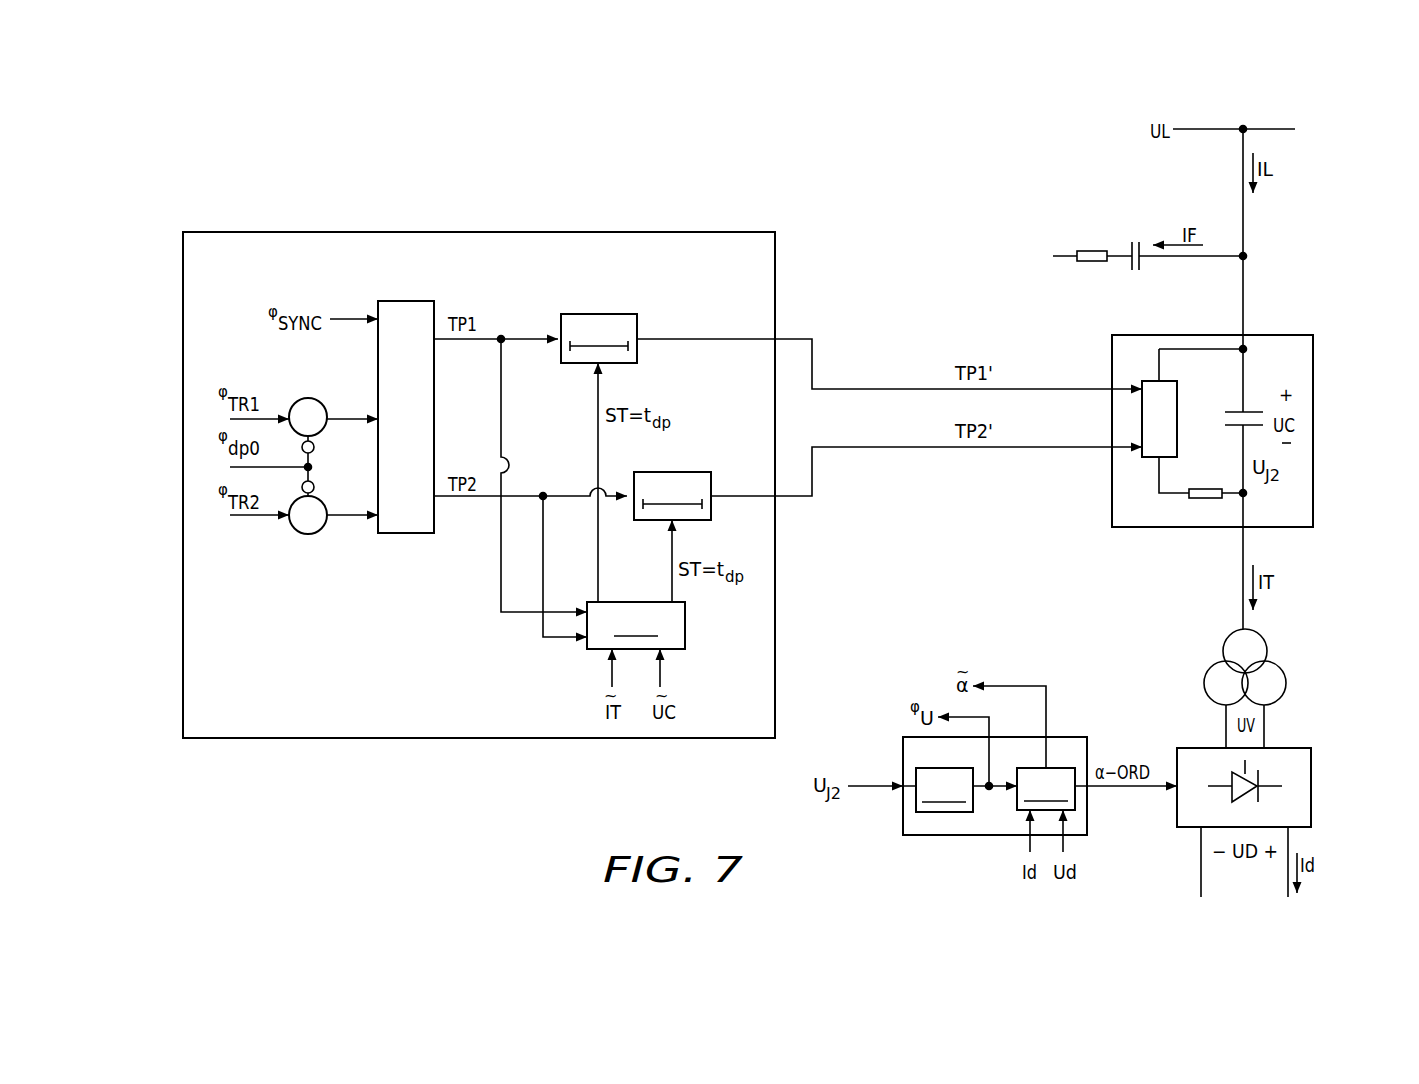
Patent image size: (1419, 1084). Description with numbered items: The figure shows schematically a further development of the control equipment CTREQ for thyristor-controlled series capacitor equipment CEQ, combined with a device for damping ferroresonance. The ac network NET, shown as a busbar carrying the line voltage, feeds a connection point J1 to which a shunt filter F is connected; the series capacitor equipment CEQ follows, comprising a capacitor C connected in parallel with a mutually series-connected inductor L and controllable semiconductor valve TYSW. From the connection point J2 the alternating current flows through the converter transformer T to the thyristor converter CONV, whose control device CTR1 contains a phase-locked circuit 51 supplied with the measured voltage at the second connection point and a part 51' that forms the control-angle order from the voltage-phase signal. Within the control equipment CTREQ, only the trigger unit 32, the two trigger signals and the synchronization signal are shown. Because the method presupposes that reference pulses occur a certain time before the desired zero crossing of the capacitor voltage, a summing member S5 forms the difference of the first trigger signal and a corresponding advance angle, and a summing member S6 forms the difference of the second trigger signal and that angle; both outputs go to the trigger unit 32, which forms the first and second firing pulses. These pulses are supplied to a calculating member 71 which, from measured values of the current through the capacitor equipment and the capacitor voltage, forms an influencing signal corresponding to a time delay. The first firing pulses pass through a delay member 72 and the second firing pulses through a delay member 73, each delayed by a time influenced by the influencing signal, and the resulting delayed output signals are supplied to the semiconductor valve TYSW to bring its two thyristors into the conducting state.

The trigger unit 32 is at (412, 301).
The summing member S5 is at (323, 403).
The summing member S6 is at (323, 530).
The calculating member 71 is at (685, 628).
The delay member 72 is at (637, 328).
The delay member 73 is at (711, 483).
The phase-locked circuit 51 is at (944, 822).
The control device part 51' is at (1029, 822).
The control equipment CTREQ is at (741, 232).
The ac network NET is at (1207, 131).
The connection point J1 is at (1243, 256).
The shunt filter F is at (1122, 263).
The thyristor-controlled series capacitor equipment CEQ is at (1142, 527).
The controllable semiconductor valve TYSW is at (1142, 457).
The capacitor C is at (1232, 428).
The inductor L is at (1205, 498).
The connection point J2 is at (1243, 493).
The converter transformer T is at (1215, 655).
The thyristor converter CONV is at (1311, 760).
The control device CTR1 is at (1072, 737).